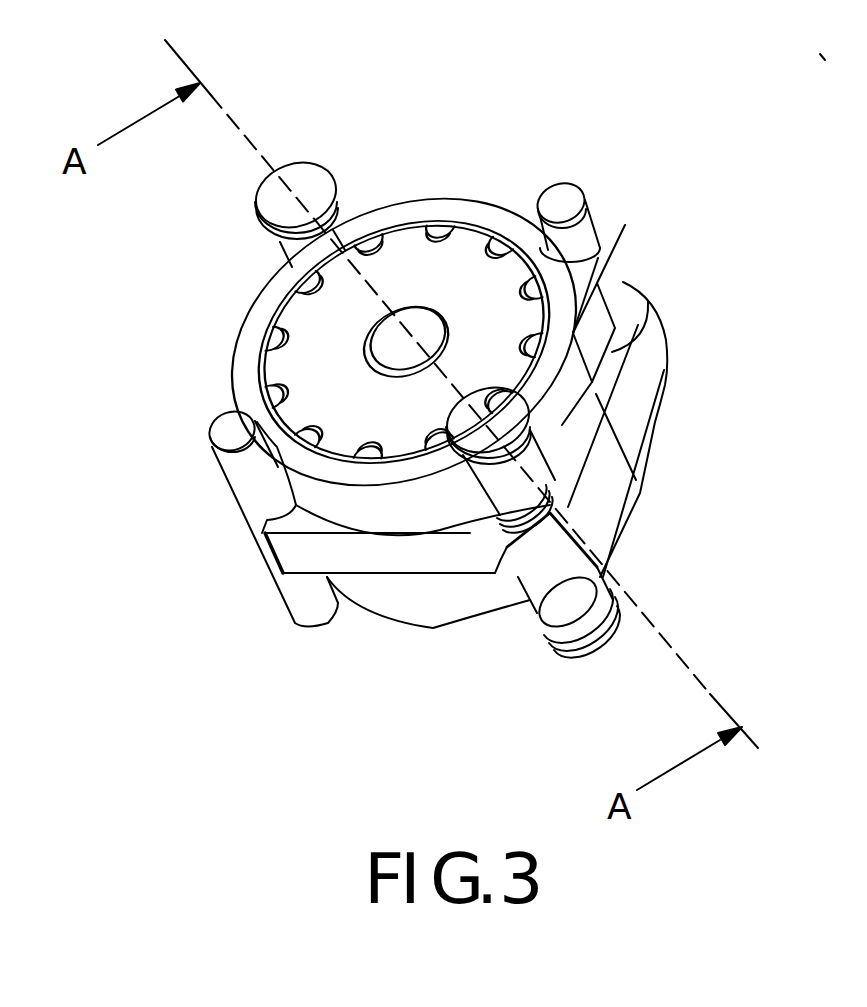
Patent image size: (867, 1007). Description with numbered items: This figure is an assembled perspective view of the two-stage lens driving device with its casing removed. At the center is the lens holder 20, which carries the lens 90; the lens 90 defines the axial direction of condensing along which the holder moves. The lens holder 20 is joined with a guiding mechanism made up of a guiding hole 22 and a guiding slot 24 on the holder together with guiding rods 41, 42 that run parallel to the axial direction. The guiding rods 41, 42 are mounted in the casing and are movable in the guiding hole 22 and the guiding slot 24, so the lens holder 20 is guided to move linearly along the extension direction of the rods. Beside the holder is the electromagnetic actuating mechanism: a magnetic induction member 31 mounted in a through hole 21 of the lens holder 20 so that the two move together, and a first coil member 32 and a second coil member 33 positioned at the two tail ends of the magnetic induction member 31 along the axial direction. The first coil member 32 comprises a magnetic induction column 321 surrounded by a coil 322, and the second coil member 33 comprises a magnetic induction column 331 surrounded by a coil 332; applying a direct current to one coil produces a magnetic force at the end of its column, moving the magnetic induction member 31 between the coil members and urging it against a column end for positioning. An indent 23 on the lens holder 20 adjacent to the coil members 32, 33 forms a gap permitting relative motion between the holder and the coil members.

The lens holder 20 is at (393, 510).
The through hole 21 is at (510, 537).
The guiding hole 22 is at (603, 250).
The indent 23 is at (342, 228).
The guiding slot 24 is at (280, 515).
The magnetic induction member 31 is at (603, 567).
The first coil member 32 is at (763, 398).
The magnetic induction column 321 is at (303, 177).
The coil 322 is at (537, 470).
The second coil member 33 is at (612, 723).
The magnetic induction column 331 is at (567, 643).
The coil 332 is at (540, 623).
The guiding rod 41 is at (588, 250).
The guiding rod 42 is at (237, 467).
The lens 90 is at (457, 273).